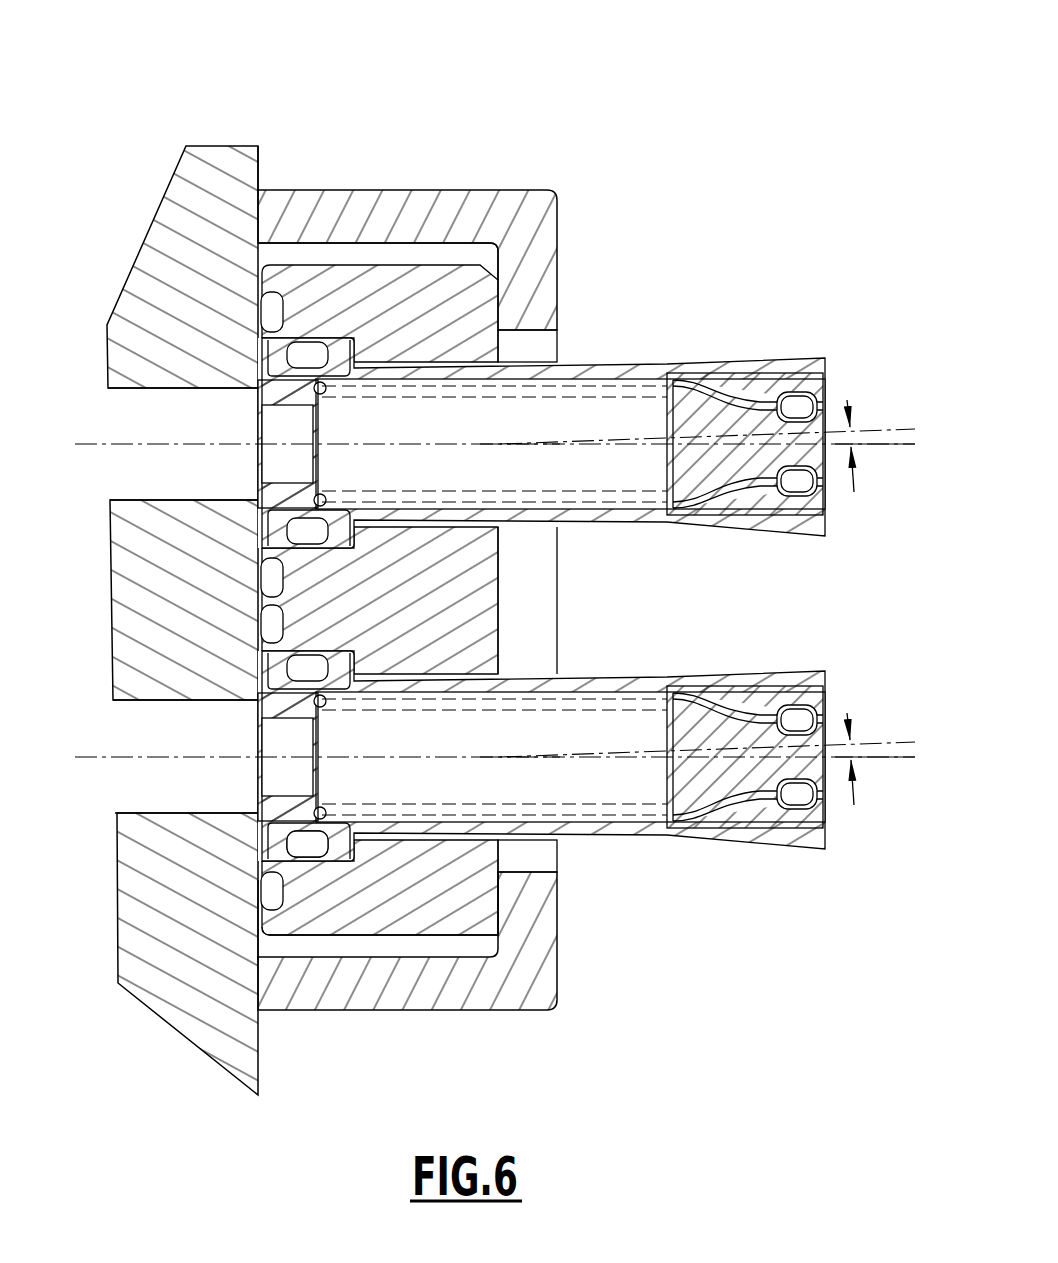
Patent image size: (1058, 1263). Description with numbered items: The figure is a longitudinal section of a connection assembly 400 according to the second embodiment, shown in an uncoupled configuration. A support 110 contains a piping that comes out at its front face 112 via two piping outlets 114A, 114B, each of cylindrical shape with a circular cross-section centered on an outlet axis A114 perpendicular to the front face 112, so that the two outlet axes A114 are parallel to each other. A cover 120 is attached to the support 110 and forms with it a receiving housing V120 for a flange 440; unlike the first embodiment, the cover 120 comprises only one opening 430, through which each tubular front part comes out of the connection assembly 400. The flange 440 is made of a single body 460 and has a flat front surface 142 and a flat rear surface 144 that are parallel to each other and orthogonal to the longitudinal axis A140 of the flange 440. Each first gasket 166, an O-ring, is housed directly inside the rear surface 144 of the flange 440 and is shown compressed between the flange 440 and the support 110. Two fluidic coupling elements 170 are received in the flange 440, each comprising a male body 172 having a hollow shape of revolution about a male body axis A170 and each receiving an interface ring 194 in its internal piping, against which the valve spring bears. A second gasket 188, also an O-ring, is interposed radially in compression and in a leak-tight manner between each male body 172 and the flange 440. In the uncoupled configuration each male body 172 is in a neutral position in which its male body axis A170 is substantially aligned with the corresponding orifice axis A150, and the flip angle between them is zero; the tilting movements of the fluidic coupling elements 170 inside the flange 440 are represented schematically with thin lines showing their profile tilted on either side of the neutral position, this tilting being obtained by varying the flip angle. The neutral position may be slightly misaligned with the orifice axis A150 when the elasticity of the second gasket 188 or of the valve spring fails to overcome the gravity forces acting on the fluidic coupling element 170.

The connection assembly 400 is at (477, 554).
The support 110 is at (190, 190).
The front face 112 is at (263, 167).
The cover 120 is at (476, 212).
The receiving housing V120 is at (434, 255).
The opening 430 is at (534, 347).
The flange 440 is at (368, 275).
The single body 460 is at (440, 905).
The front surface 142 is at (509, 895).
The rear surface 144 is at (256, 920).
The first gasket 166 is at (273, 887).
The second gasket 188 is at (312, 850).
The interface ring 194 is at (262, 692).
The fluidic coupling element 170 is at (660, 522).
The male body 172 is at (786, 392).
The piping outlet 114A is at (168, 406).
The piping outlet 114B is at (168, 719).
The outlet axis A114 is at (467, 601).
The longitudinal axis A140 is at (505, 445).
The male body axis A170 is at (893, 432).
The orifice axis A150 is at (893, 447).